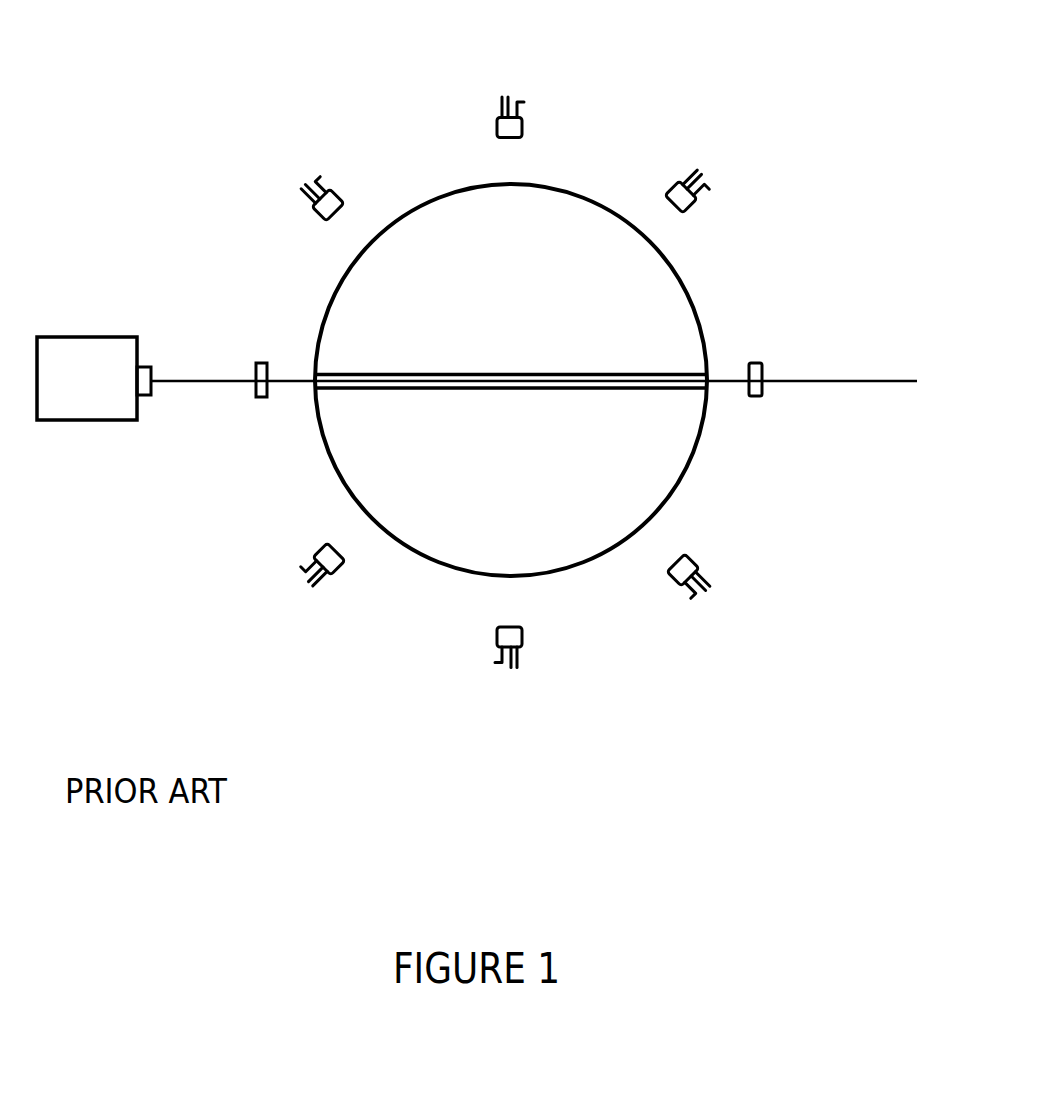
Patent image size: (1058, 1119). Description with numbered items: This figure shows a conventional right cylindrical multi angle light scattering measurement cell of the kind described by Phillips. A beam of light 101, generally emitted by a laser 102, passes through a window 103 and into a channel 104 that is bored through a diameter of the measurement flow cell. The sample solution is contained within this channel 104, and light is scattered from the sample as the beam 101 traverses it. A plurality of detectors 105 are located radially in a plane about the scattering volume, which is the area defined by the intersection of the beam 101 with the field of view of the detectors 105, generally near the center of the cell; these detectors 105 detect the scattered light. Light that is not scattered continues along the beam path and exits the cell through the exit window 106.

The beam of light 101 is at (185, 395).
The laser 102 is at (78, 325).
The window 103 is at (258, 410).
The channel 104 is at (633, 370).
The detectors 105 is at (335, 150).
The exit window 106 is at (753, 402).